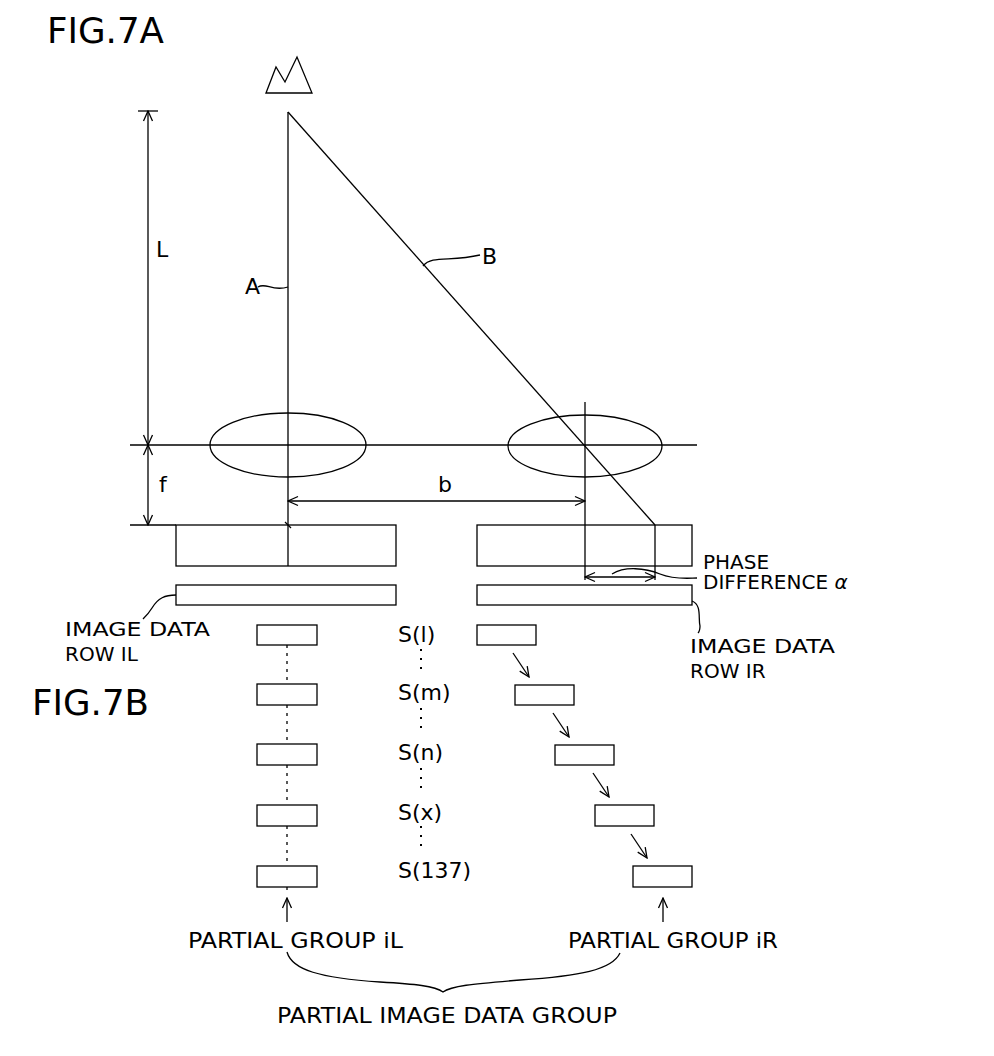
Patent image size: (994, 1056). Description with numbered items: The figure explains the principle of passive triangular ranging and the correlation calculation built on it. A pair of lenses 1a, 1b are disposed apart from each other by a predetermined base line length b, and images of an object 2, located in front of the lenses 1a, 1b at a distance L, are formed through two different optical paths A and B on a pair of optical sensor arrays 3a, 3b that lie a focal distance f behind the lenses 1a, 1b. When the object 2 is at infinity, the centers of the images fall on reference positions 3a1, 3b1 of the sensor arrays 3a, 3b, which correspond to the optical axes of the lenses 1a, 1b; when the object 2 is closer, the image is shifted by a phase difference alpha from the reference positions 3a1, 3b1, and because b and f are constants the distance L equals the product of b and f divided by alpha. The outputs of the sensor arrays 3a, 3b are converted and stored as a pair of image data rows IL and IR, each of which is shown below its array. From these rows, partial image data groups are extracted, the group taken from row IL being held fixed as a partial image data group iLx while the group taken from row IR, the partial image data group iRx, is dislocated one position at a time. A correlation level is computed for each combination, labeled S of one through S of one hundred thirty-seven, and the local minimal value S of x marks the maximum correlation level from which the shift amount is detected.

In FIG. 7A, the object 2 is at (310, 75).
In FIG. 7A, the lens 1a is at (225, 425).
In FIG. 7A, the lens 1b is at (603, 418).
In FIG. 7A, the optical sensor array 3a is at (176, 545).
In FIG. 7A, the optical sensor array 3b is at (655, 525).
In FIG. 7A, the reference position 3a1 is at (288, 525).
In FIG. 7A, the reference position 3b1 is at (585, 525).
In FIG. 7B, the partial image data group iLx is at (257, 816).
In FIG. 7B, the partial image data group iRx is at (654, 816).